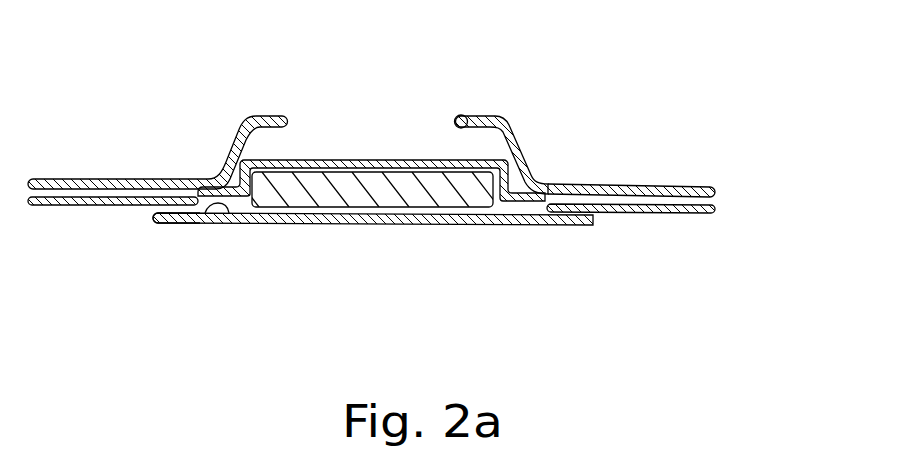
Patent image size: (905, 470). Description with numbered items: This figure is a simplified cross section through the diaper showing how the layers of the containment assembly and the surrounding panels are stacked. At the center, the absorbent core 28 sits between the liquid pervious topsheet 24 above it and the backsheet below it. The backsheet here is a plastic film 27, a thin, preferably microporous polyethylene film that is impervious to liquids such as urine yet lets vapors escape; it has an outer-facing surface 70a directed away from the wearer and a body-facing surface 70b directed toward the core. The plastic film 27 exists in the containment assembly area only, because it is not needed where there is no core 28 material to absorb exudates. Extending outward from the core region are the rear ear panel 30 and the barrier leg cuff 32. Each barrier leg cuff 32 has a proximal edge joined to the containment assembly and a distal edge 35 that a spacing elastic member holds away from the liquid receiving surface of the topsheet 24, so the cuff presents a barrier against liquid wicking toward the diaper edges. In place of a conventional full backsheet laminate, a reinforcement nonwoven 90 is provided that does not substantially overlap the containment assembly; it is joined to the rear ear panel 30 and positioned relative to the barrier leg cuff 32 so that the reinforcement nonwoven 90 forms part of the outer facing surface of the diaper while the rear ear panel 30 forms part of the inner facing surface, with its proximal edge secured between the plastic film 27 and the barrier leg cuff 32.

The topsheet 24 is at (320, 160).
The plastic film 27 is at (380, 224).
The absorbent core 28 is at (386, 190).
The rear ear panel 30 is at (662, 186).
The barrier leg cuff 32 is at (514, 137).
The distal edge 35 is at (460, 115).
The outer-facing surface 70a is at (247, 225).
The body-facing surface 70b is at (195, 223).
The reinforcement nonwoven 90 is at (674, 213).